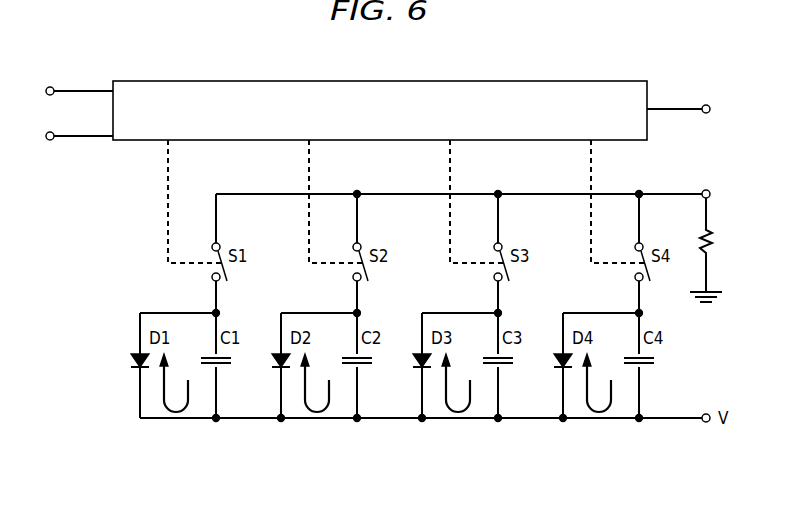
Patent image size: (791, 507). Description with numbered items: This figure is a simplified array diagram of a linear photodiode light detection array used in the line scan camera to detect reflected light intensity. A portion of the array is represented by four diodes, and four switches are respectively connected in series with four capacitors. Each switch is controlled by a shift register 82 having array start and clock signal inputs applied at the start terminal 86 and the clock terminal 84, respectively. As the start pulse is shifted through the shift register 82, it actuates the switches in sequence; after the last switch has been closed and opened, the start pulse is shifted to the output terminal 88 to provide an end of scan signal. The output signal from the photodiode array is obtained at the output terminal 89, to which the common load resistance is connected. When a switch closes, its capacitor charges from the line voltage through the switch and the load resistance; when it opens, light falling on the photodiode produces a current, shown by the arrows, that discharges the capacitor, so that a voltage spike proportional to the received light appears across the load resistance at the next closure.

The shift register 82 is at (628, 80).
The clock signal input terminal 84 is at (49, 87).
The array start input terminal 86 is at (50, 140).
The output terminal 88 is at (706, 104).
The output terminal 89 is at (706, 189).